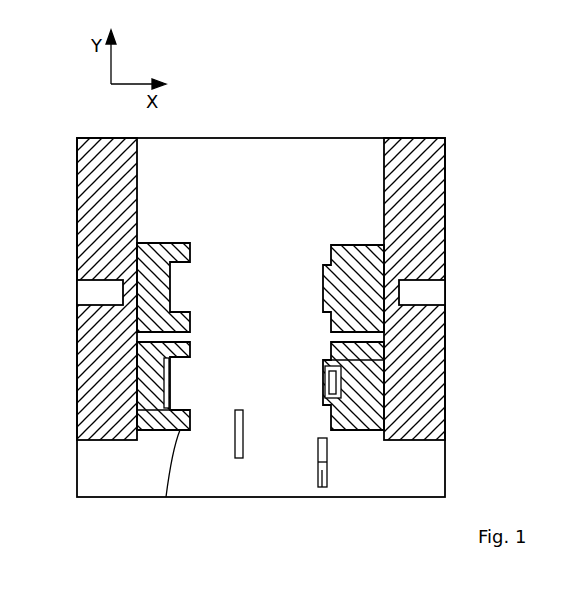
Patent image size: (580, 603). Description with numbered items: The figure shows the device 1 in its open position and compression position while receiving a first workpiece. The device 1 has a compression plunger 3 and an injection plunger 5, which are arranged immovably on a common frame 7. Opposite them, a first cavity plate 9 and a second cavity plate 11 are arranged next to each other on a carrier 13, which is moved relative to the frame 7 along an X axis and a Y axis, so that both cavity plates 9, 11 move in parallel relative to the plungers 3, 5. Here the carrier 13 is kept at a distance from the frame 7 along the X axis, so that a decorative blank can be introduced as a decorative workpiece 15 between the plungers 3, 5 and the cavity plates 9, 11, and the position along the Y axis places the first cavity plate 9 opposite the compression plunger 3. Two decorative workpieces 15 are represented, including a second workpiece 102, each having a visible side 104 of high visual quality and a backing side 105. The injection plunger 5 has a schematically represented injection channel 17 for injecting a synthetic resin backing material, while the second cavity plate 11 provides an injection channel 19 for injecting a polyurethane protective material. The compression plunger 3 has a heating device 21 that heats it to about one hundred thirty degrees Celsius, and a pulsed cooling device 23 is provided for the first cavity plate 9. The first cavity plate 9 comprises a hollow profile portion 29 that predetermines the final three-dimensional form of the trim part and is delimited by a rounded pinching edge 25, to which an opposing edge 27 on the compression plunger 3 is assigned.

The device 1 is at (378, 95).
The compression plunger 3 is at (365, 415).
The injection plunger 5 is at (362, 245).
The frame 7 is at (425, 393).
The first cavity plate 9 is at (140, 418).
The second cavity plate 11 is at (158, 244).
The carrier 13 is at (95, 248).
The decorative workpiece 15 is at (241, 456).
The injection channel 17 is at (430, 293).
The injection channel 19 is at (100, 293).
The heating device 21 is at (345, 359).
The pulsed cooling device 23 is at (165, 380).
The pinching edge 25 is at (150, 350).
The opposing edge 27 is at (323, 400).
The hollow profile portion 29 is at (178, 395).
The second workpiece 102 is at (324, 487).
The visible side 104 is at (324, 460).
The backing side 105 is at (325, 460).